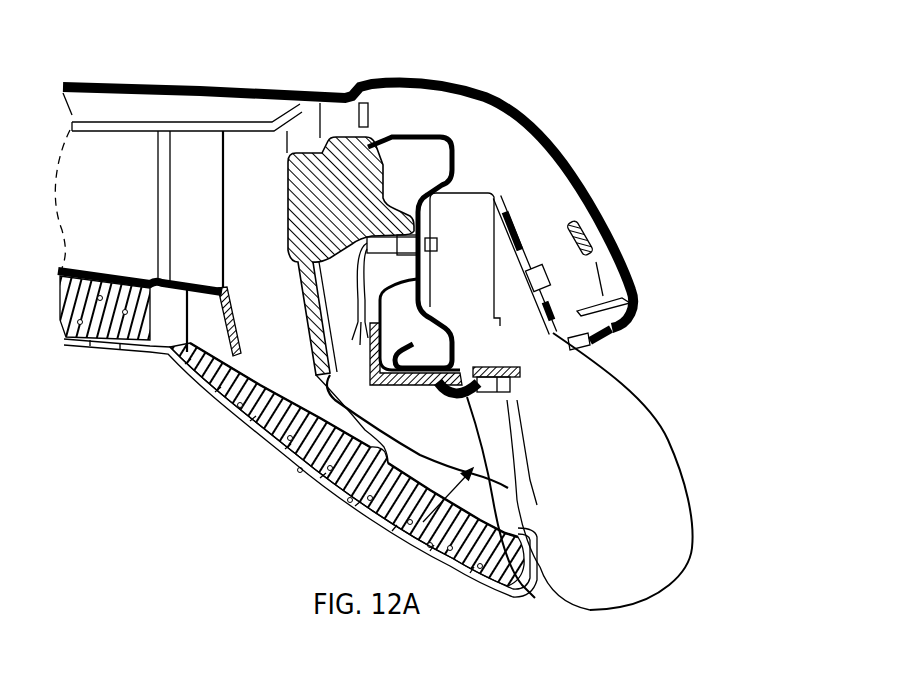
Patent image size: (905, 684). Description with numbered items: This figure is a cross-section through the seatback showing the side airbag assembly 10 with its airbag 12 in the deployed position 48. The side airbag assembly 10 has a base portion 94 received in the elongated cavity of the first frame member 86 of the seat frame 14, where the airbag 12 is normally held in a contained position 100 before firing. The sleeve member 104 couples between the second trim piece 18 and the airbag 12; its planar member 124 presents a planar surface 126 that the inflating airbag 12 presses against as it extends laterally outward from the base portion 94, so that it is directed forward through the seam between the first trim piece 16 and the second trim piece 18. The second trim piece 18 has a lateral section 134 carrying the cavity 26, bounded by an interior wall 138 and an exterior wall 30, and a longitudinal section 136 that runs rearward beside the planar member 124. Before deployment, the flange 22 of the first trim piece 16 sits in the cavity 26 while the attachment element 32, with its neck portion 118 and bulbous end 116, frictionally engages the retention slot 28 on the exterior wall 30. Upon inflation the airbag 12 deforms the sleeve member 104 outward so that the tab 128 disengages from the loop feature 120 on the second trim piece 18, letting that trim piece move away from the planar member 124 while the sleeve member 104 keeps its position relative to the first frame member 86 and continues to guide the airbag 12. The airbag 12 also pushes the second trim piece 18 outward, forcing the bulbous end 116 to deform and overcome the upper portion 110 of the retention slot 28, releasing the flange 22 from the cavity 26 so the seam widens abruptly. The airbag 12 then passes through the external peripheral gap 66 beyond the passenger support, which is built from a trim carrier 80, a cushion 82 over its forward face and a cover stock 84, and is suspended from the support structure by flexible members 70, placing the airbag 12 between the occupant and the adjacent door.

The side airbag assembly 10 is at (685, 392).
The airbag 12 is at (644, 551).
The seat frame 14 is at (423, 137).
The first trim piece 16 is at (433, 398).
The second trim piece 18 is at (500, 107).
The flange 22 is at (528, 378).
The cavity 26 is at (645, 487).
The retention slot 28 is at (590, 350).
The exterior wall 30 is at (608, 338).
The attachment element 32 is at (497, 416).
The deployed position 48 is at (700, 440).
The external peripheral gap 66 is at (427, 560).
The flexible member 70 is at (492, 497).
The trim carrier 80 is at (213, 315).
The cushion 82 is at (313, 463).
The cover stock 84 is at (340, 510).
The first frame member 86 is at (387, 140).
The base portion 94 is at (462, 217).
The contained position 100 is at (411, 200).
The sleeve member 104 is at (455, 193).
The upper portion 110 is at (563, 350).
The bulbous end 116 is at (530, 425).
The neck portion 118 is at (500, 412).
The loop feature 120 is at (585, 280).
The planar member 124 is at (510, 227).
The planar surface 126 is at (527, 265).
The tab 128 is at (567, 227).
The lateral section 134 is at (603, 281).
The longitudinal section 136 is at (560, 149).
The interior wall 138 is at (630, 328).